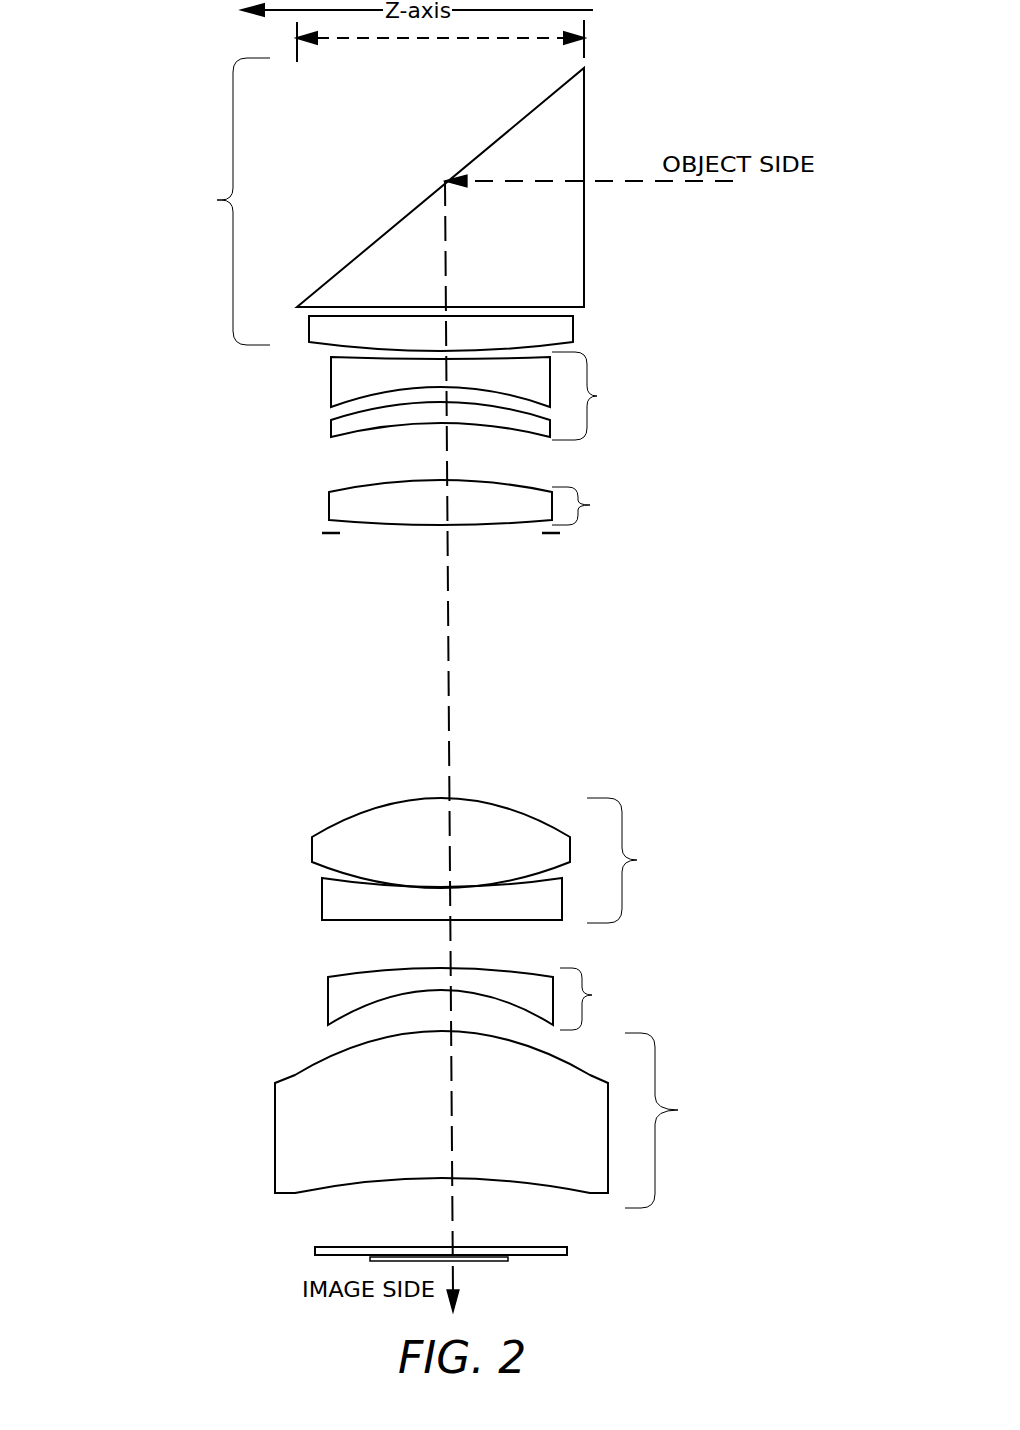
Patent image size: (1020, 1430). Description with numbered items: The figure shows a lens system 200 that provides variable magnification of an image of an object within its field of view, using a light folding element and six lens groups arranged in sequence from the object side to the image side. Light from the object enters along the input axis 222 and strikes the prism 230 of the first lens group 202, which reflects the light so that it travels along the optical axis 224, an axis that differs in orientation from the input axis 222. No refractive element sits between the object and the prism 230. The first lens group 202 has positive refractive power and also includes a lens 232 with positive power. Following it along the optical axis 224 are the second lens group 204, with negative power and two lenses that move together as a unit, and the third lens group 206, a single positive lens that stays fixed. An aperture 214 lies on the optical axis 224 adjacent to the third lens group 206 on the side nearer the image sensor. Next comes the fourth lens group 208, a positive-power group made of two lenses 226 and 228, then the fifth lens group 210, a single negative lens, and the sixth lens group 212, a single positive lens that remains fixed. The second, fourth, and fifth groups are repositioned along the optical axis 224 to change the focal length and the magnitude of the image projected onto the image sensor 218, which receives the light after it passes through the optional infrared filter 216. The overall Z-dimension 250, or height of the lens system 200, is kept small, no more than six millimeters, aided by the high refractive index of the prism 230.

The lens system 200 is at (152, 82).
The first lens group 202 is at (426, 204).
The second lens group 204 is at (531, 396).
The third lens group 206 is at (524, 508).
The fourth lens group 208 is at (547, 850).
The fifth lens group 210 is at (526, 999).
The sixth lens group 212 is at (544, 1119).
The aperture 214 is at (426, 557).
The infrared filter 216 is at (492, 1264).
The image sensor 218 is at (504, 1283).
The input axis 222 is at (591, 152).
The optical axis 224 is at (620, 746).
The lens 226 is at (542, 813).
The lens 228 is at (552, 920).
The prism 230 is at (506, 187).
The lens 232 is at (505, 319).
The Z-dimension 250 is at (440, 55).